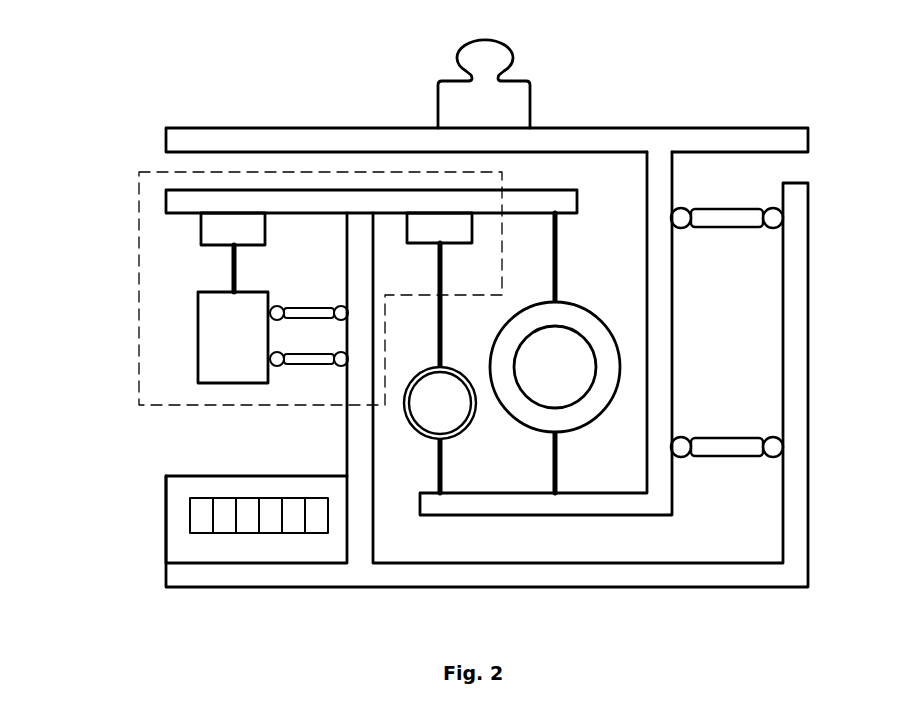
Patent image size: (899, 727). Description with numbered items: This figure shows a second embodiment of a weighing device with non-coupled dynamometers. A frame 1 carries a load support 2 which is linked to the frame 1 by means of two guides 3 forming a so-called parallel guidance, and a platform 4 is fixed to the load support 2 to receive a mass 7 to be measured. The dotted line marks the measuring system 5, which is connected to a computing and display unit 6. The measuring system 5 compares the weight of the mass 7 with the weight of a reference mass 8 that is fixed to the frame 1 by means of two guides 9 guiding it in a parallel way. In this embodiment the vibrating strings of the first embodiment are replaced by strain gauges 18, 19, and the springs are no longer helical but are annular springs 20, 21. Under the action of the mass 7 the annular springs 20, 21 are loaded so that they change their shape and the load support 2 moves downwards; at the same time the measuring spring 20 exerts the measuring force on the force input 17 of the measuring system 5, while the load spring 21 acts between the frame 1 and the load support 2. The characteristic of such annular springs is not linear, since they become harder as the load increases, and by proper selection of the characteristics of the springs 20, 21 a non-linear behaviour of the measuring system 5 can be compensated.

The frame 1 is at (800, 413).
The load support 2 is at (660, 350).
The guides 3 is at (728, 450).
The platform 4 is at (624, 133).
The measuring system 5 is at (165, 288).
The computing and display unit 6 is at (182, 526).
The mass 7 is at (505, 93).
The reference mass 8 is at (220, 331).
The guides 9 is at (300, 313).
The force-input point 17 is at (434, 246).
The strain gauge 18 is at (220, 228).
The strain gauge 19 is at (420, 225).
The measuring spring 20 is at (428, 438).
The load spring 21 is at (590, 322).